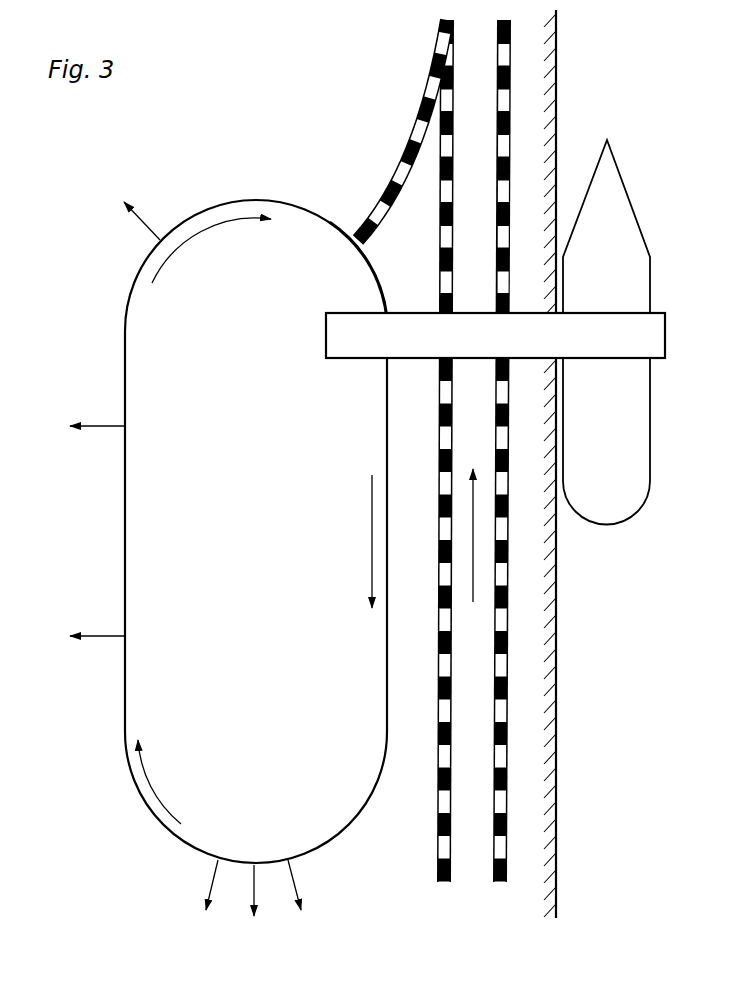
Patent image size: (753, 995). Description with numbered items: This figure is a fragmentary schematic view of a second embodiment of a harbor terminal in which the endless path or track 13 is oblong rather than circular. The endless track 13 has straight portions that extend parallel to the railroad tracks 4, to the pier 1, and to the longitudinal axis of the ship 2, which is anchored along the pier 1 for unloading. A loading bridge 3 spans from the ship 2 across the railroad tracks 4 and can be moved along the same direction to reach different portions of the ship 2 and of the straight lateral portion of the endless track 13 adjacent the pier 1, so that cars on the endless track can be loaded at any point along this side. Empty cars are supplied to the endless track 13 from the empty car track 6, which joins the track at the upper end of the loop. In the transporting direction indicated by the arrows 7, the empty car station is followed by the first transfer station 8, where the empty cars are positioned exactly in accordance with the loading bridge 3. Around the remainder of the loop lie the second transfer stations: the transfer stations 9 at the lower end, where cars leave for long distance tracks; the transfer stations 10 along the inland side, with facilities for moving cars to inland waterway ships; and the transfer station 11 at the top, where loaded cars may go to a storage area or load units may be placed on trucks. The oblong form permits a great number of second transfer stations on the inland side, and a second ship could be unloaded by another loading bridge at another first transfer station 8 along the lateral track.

The pier 1 is at (557, 762).
The ship 2 is at (640, 452).
The loading bridge 3 is at (470, 327).
The railroad tracks 4 is at (497, 751).
The empty car station 6 is at (351, 238).
The arrows indicating transporting direction 7 is at (205, 234).
The first transfer station 8 is at (389, 311).
The second transfer stations for long distance tracks 9 is at (290, 852).
The second transfer stations for inland waterway ships 10 is at (143, 428).
The second transfer stations for storage area or trucks 11 is at (164, 238).
The endless track 13 is at (125, 302).